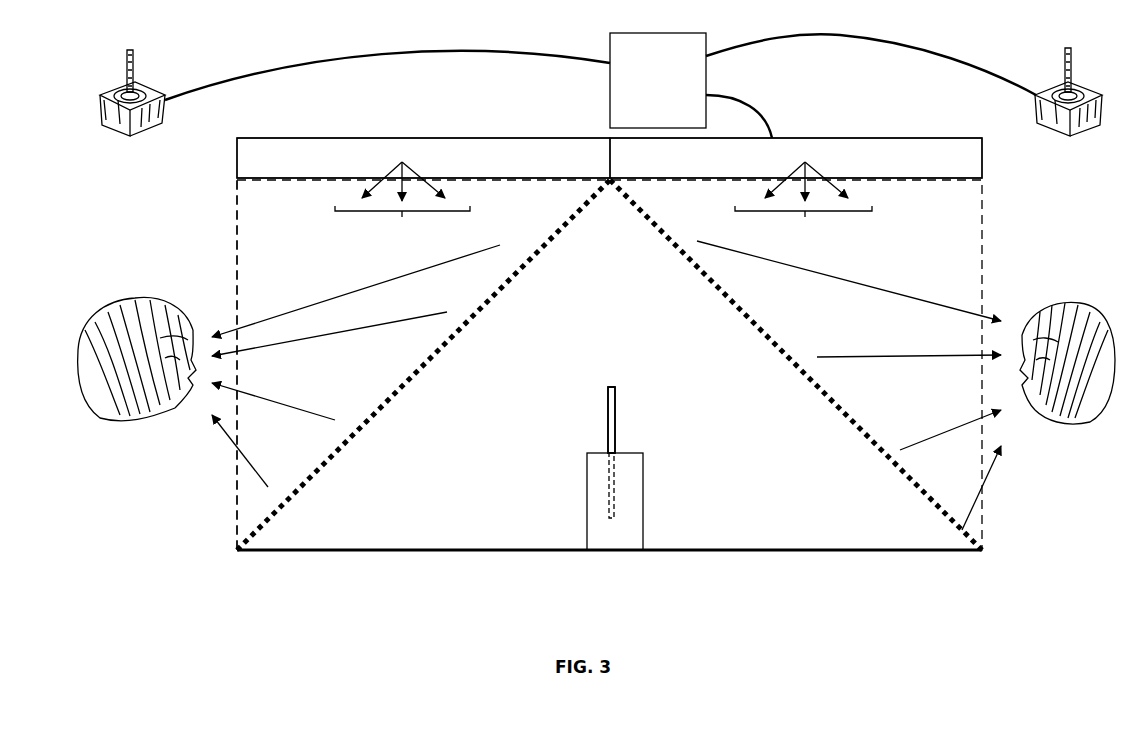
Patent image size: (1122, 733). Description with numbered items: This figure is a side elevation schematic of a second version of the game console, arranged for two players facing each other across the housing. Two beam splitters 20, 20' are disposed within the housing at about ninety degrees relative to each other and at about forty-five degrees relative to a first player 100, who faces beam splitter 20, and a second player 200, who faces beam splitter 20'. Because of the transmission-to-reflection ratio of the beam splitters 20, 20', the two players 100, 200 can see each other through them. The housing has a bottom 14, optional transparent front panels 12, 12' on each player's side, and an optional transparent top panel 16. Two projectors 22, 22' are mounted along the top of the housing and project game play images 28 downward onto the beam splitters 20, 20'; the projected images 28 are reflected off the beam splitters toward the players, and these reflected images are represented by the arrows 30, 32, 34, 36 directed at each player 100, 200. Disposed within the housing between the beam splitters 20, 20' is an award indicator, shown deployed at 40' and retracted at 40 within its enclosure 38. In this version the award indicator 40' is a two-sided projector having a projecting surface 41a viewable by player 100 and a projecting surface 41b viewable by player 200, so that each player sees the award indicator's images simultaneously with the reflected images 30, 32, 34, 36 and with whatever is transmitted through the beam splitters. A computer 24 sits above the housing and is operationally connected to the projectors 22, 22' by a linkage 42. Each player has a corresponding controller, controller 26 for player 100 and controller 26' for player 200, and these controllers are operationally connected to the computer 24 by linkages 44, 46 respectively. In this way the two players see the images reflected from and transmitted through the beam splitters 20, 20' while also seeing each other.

The transparent front panel 12 is at (633, 356).
The transparent front panel 12' is at (209, 364).
The bottom 14 is at (863, 552).
The transparent top panel 16 is at (905, 181).
The projector 22 is at (796, 158).
The projector 22' is at (423, 158).
The computer 24 is at (658, 80).
The controller 26 is at (1068, 118).
The controller 26' is at (132, 121).
The game play images 28 is at (603, 203).
The reflected image 30 is at (330, 300).
The reflected image 32 is at (447, 312).
The reflected image 34 is at (312, 413).
The reflected image 36 is at (258, 478).
The beam splitter 20 is at (796, 365).
The beam splitter 20' is at (423, 365).
The enclosure 38 is at (615, 501).
The award indicator 40 is at (574, 492).
The award indicator 40' is at (576, 443).
The projecting surface 41a is at (615, 410).
The projecting surface 41b is at (608, 408).
The linkage 42 is at (768, 114).
The linkage 44 is at (905, 50).
The linkage 46 is at (497, 53).
The first player 100 is at (1062, 302).
The second player 200 is at (100, 300).